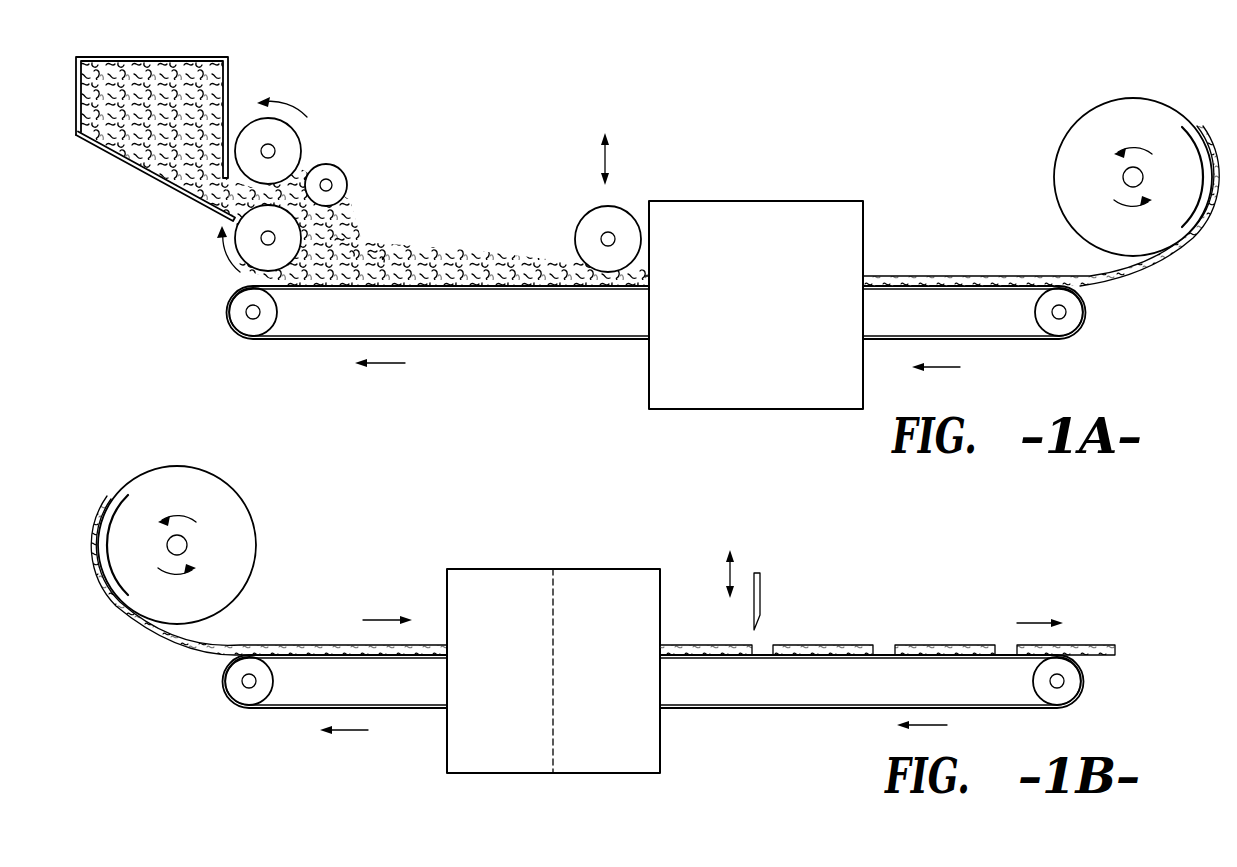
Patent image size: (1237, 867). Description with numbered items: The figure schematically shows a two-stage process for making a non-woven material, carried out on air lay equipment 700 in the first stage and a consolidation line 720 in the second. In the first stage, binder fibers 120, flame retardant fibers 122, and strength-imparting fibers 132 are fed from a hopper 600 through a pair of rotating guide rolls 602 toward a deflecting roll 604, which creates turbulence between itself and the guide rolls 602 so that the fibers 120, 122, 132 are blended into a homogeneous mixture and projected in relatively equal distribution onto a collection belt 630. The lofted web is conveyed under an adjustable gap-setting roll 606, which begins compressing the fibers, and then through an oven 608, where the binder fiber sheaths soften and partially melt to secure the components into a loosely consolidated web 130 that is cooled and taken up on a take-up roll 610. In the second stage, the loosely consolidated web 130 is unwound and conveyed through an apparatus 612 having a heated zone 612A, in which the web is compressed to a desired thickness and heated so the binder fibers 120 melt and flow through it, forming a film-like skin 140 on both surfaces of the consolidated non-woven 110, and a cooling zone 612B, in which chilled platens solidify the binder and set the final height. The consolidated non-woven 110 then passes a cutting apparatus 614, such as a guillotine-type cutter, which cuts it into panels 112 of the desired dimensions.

In FIG. 1A, the air lay equipment 700 is at (488, 136).
In FIG. 1B, the web cutting system 720 is at (374, 492).
In FIG. 1A, the hopper 600 is at (158, 182).
In FIG. 1A, the rotating guide rolls 602 is at (290, 147).
In FIG. 1A, the deflecting roll 604 is at (328, 165).
In FIG. 1A, the adjustable gap-setting roll 606 is at (620, 203).
In FIG. 1A, the oven 608 is at (767, 201).
In FIG. 1A, the take-up roll 610 is at (1092, 112).
In FIG. 1B, the take-up roll 610 is at (180, 467).
In FIG. 1A, the collection belt 630 is at (445, 287).
In FIG. 1A, the binder fibers 120 is at (437, 258).
In FIG. 1A, the flame retardant fibers 122 is at (345, 250).
In FIG. 1A, the strength-imparting fibers 132 is at (375, 248).
In FIG. 1A, the loosely consolidated web 130 is at (883, 246).
In FIG. 1B, the loosely consolidated web 130 is at (322, 643).
In FIG. 1B, the apparatus 612 is at (565, 569).
In FIG. 1B, the heated zone 612A is at (470, 569).
In FIG. 1B, the cooling zone 612B is at (617, 569).
In FIG. 1B, the cutting apparatus 614 is at (762, 587).
In FIG. 1B, the consolidated non-woven 110 is at (706, 645).
In FIG. 1B, the panels 112 is at (858, 644).
In FIG. 1B, the film-like skin 140 is at (848, 645).